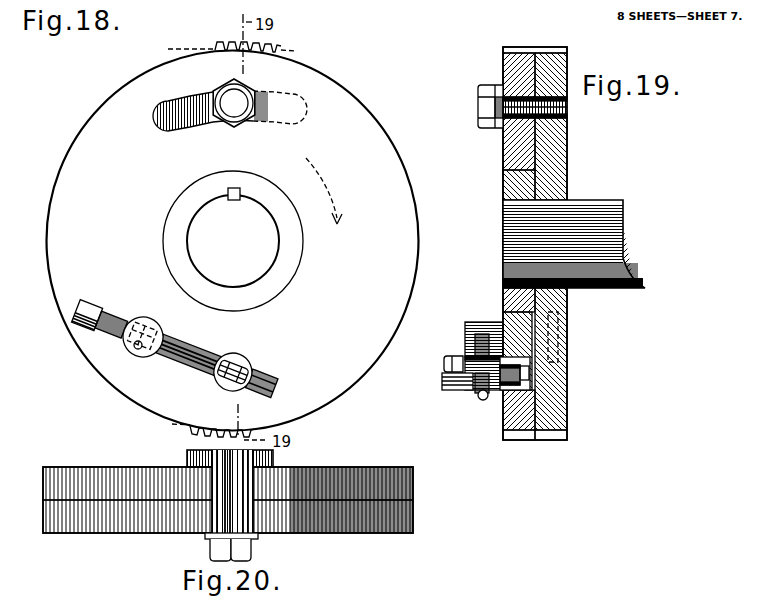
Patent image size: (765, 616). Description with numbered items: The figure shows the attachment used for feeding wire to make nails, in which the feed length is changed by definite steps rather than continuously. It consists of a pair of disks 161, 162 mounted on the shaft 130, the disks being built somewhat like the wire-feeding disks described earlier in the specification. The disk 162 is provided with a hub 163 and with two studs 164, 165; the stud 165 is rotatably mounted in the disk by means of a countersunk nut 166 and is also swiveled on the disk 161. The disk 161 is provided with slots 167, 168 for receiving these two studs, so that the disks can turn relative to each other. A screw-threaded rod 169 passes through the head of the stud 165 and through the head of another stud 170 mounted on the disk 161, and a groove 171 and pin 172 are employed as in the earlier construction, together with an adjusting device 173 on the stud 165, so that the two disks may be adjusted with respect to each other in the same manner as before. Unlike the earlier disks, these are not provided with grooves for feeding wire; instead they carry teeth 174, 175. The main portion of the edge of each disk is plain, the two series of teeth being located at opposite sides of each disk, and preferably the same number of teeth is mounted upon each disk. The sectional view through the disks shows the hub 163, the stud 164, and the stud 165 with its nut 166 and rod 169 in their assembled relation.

In FIG. 18, the shaft 130 is at (233, 237).
In FIG. 19, the shaft 130 is at (610, 200).
In FIG. 20, the shaft 130 is at (275, 462).
In FIG. 18, the disk 161 is at (417, 215).
In FIG. 19, the disk 161 is at (512, 68).
In FIG. 20, the disk 161 is at (413, 512).
In FIG. 19, the disk 162 is at (567, 62).
In FIG. 20, the disk 162 is at (413, 486).
In FIG. 18, the hub 163 is at (288, 256).
In FIG. 19, the hub 163 is at (515, 178).
In FIG. 18, the stud 164 is at (240, 101).
In FIG. 19, the stud 164 is at (569, 110).
In FIG. 18, the stud 165 is at (252, 367).
In FIG. 19, the stud 165 is at (465, 322).
In FIG. 19, the countersunk nut 166 is at (567, 347).
In FIG. 18, the slot 167 is at (191, 120).
In FIG. 18, the slot 168 is at (170, 378).
In FIG. 18, the screw-threaded rod 169 is at (113, 312).
In FIG. 19, the screw-threaded rod 169 is at (478, 397).
In FIG. 18, the stud 170 is at (130, 347).
In FIG. 18, the groove 171 is at (163, 326).
In FIG. 19, the groove 171 is at (493, 398).
In FIG. 18, the pin 172 is at (141, 350).
In FIG. 18, the adjusting device 173 is at (241, 360).
In FIG. 19, the adjusting device 173 is at (443, 372).
In FIG. 18, the teeth 174 is at (224, 244).
In FIG. 19, the teeth 174 is at (503, 50).
In FIG. 20, the teeth 174 is at (250, 518).
In FIG. 18, the teeth 175 is at (282, 50).
In FIG. 19, the teeth 175 is at (567, 49).
In FIG. 20, the teeth 175 is at (222, 485).